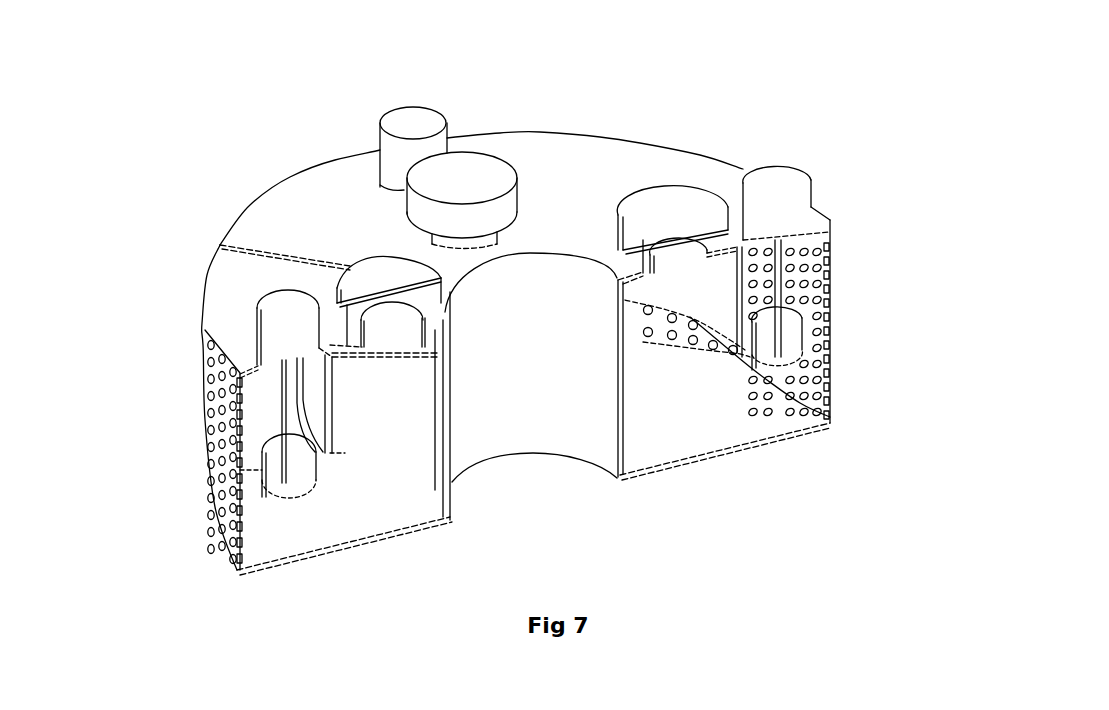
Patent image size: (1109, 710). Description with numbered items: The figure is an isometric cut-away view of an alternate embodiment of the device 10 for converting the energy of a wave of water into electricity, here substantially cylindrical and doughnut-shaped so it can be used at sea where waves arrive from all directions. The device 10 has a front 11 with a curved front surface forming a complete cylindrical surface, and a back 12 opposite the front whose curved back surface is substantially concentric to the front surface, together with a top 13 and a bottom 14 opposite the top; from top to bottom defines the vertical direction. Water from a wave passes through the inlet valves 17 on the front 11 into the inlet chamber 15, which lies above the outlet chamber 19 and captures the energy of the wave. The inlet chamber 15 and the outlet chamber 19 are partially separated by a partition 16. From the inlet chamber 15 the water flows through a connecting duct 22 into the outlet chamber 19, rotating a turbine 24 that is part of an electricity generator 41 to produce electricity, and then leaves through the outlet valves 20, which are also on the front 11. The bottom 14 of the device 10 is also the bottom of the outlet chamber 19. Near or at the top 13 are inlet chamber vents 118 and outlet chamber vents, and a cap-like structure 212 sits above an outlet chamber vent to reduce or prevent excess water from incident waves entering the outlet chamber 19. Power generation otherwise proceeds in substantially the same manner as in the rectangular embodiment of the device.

The device 10 is at (678, 118).
The front 11 is at (167, 438).
The back 12 is at (600, 356).
The top 13 is at (420, 72).
The bottom 14 is at (416, 565).
The inlet chamber 15 is at (275, 418).
The partition 16 is at (303, 415).
The inlet valves 17 is at (828, 298).
The outlet chamber 19 is at (397, 402).
The outlet valves 20 is at (828, 408).
The connecting duct 22 is at (268, 486).
The turbine 24 is at (787, 360).
The electricity generator 41 is at (785, 208).
The inlet chamber vents 118 is at (828, 242).
The cap-like structure 212 is at (680, 200).